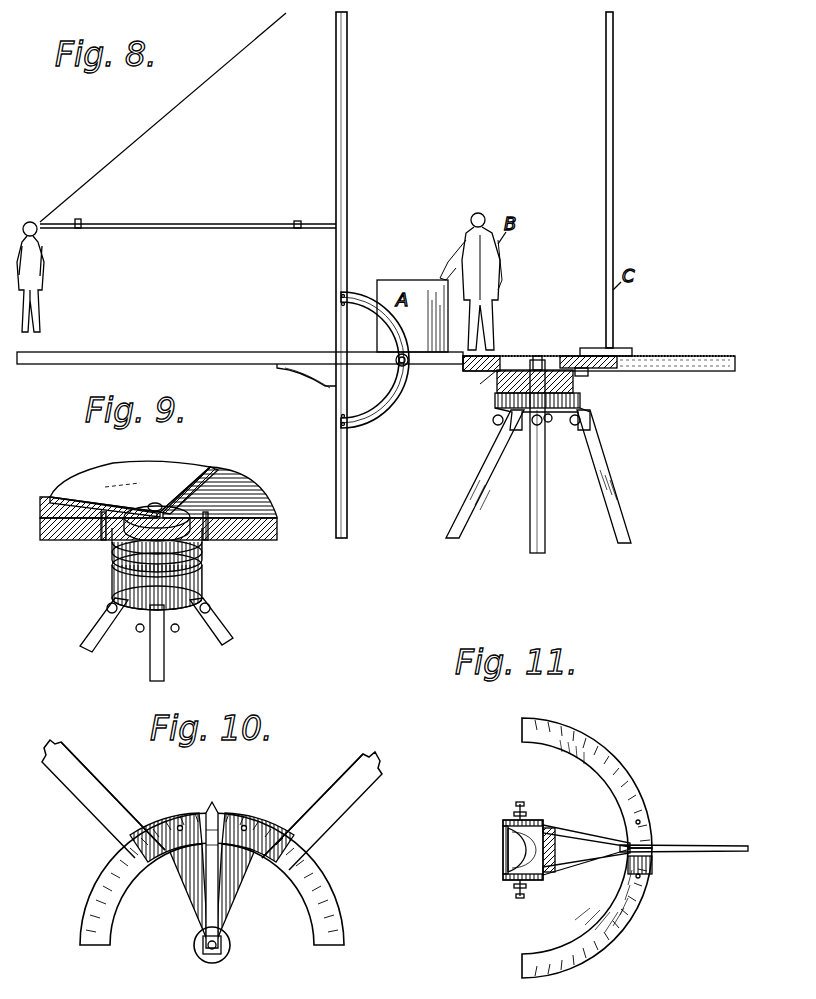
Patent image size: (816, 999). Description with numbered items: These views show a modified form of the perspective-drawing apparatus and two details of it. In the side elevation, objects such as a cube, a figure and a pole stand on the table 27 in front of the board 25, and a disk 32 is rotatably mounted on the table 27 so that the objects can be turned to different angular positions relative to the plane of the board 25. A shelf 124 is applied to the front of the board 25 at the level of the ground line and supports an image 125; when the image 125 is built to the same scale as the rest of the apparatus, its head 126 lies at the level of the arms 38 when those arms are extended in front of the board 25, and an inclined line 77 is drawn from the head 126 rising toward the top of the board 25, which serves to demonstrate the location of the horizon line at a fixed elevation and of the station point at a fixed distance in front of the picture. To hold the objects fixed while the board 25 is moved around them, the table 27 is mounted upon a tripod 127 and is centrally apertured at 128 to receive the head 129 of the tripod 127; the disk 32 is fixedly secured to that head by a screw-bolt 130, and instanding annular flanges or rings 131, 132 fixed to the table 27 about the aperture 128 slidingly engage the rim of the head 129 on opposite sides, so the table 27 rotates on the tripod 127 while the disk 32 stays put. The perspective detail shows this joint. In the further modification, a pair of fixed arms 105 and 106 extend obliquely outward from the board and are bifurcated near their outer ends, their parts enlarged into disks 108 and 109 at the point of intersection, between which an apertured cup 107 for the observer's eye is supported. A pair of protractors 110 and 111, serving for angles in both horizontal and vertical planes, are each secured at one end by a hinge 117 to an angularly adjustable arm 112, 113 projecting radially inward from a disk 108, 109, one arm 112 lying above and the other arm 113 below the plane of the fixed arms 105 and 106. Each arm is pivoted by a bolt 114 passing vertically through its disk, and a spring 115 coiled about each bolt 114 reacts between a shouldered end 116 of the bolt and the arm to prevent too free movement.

In FIG. 8, the board 25 is at (337, 470).
In FIG. 8, the table 27 is at (704, 372).
In FIG. 9, the table 27 is at (243, 488).
In FIG. 8, the disk 32 is at (688, 352).
In FIG. 9, the disk 32 is at (175, 457).
In FIG. 8, the arms 38 is at (212, 220).
In FIG. 8, the line of sight 77 is at (152, 134).
In FIG. 8, the shelf 124 is at (252, 356).
In FIG. 8, the image 125 is at (38, 223).
In FIG. 8, the head 126 is at (545, 490).
In FIG. 9, the head 126 is at (164, 674).
In FIG. 8, the tripod 127 is at (500, 385).
In FIG. 9, the tripod 127 is at (103, 547).
In FIG. 8, the aperture 128 is at (498, 401).
In FIG. 9, the aperture 128 is at (108, 572).
In FIG. 8, the head 129 is at (536, 357).
In FIG. 9, the head 129 is at (156, 504).
In FIG. 8, the screw-bolt 130 is at (582, 396).
In FIG. 8, the annular flange 131 is at (582, 357).
In FIG. 9, the annular flange 131 is at (210, 505).
In FIG. 8, the annular flange 132 is at (586, 376).
In FIG. 9, the annular flange 132 is at (215, 548).
In FIG. 10, the fixed arm 105 is at (104, 802).
In FIG. 10, the fixed arm 106 is at (362, 812).
In FIG. 11, the apertured cup 107 is at (506, 852).
In FIG. 11, the disk 108 is at (505, 828).
In FIG. 11, the disk 109 is at (514, 886).
In FIG. 10, the protractor 110 is at (92, 888).
In FIG. 11, the protractor 110 is at (640, 805).
In FIG. 10, the protractor 111 is at (318, 883).
In FIG. 11, the protractor 111 is at (642, 886).
In FIG. 10, the angularly adjustable arm 112 is at (200, 868).
In FIG. 11, the angularly adjustable arm 112 is at (590, 838).
In FIG. 10, the angularly adjustable arm 113 is at (255, 868).
In FIG. 11, the angularly adjustable arm 113 is at (596, 860).
In FIG. 11, the bolt 114 is at (525, 803).
In FIG. 11, the spring 115 is at (548, 826).
In FIG. 11, the shouldered end 116 is at (527, 813).
In FIG. 10, the hinge 117 is at (212, 810).